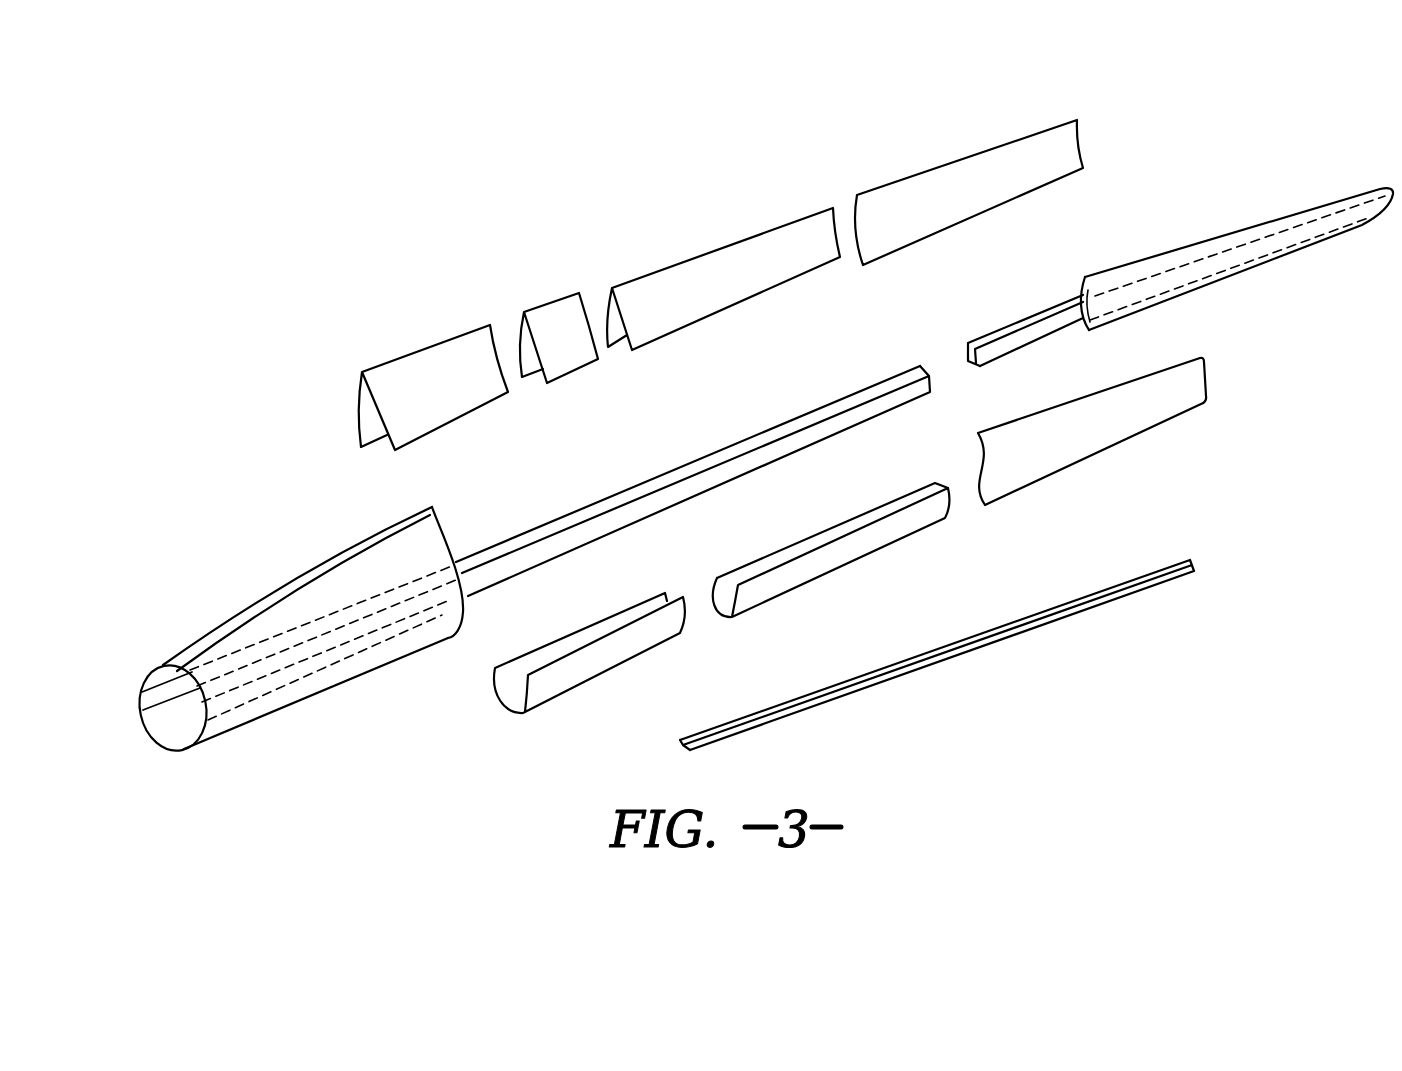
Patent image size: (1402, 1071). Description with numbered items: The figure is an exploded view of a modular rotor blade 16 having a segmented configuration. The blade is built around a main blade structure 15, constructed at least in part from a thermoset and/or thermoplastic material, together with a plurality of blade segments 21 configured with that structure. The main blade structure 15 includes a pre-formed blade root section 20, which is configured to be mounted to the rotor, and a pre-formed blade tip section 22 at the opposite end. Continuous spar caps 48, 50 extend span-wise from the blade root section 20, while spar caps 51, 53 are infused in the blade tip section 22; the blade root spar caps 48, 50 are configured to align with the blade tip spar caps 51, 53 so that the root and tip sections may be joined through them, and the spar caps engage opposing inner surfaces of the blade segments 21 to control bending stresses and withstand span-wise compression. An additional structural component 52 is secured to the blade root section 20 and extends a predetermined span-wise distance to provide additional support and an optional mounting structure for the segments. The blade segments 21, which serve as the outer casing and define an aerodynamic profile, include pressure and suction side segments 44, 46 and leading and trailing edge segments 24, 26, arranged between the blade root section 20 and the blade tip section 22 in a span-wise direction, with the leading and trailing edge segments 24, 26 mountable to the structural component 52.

The main blade structure 15 is at (290, 570).
The rotor blade 16 is at (1143, 132).
The blade root section 20 is at (292, 707).
The blade segment 21 is at (392, 352).
The blade tip section 22 is at (1247, 263).
The leading edge segment 24 is at (858, 556).
The trailing edge segment 26 is at (432, 345).
The pressure side segment 44 is at (963, 150).
The suction side segment 46 is at (1100, 455).
The blade root spar cap 48 is at (503, 540).
The blade root spar cap 50 is at (682, 482).
The blade tip spar cap 51 is at (965, 345).
The structural component 52 is at (1040, 625).
The blade tip spar cap 53 is at (1020, 350).